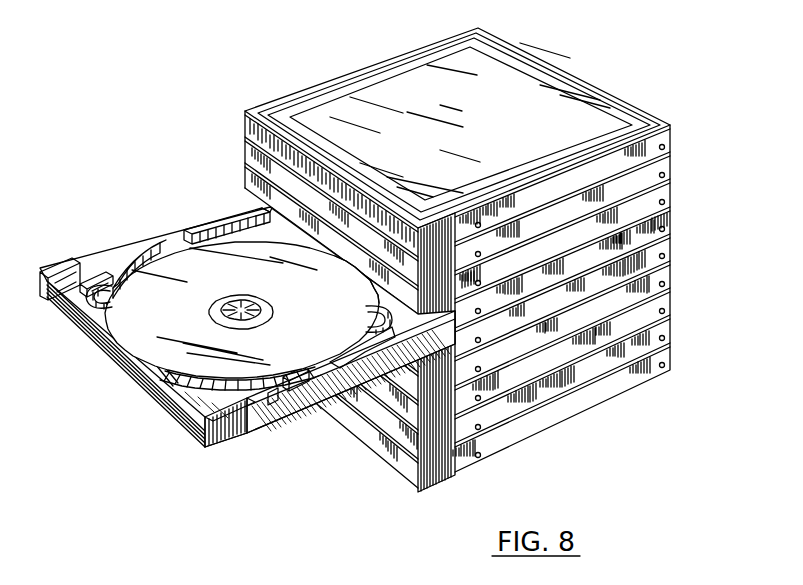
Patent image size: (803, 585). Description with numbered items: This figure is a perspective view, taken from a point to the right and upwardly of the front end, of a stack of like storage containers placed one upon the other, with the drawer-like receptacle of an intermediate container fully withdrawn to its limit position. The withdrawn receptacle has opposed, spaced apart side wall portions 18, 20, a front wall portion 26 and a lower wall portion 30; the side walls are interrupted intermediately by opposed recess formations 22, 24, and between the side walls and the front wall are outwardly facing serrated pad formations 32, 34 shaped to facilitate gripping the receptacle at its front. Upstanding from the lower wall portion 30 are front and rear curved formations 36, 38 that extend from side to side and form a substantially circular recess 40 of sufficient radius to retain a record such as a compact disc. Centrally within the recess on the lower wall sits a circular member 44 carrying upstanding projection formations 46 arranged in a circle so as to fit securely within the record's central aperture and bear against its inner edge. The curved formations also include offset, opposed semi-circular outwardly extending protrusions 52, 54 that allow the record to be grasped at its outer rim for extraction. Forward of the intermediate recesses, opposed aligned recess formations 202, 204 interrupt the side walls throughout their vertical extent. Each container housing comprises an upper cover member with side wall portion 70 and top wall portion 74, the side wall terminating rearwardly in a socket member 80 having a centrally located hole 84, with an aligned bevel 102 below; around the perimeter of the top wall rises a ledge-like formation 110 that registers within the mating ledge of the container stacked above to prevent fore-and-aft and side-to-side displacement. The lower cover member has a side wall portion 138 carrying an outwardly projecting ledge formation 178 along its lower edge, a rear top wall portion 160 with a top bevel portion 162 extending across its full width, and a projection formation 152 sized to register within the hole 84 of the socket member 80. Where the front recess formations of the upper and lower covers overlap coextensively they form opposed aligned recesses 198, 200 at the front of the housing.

The side wall portion 18 is at (305, 382).
The side wall portion 20 is at (260, 213).
The recess formation 22 is at (333, 363).
The recess formation 24 is at (173, 242).
The front wall portion 26 is at (127, 358).
The lower wall portion 30 is at (252, 208).
The serrated pad formation 32 is at (232, 435).
The serrated pad formation 34 is at (57, 267).
The front curved formation 36 is at (203, 387).
The rear curved formation 38 is at (348, 273).
The circular recess 40 is at (242, 310).
The circular member 44 is at (263, 317).
The projection formations 46 is at (247, 320).
The semi-circular protrusion 52 is at (112, 290).
The semi-circular protrusion 54 is at (372, 315).
The side wall portion 70 is at (627, 406).
The top wall portion 74 is at (455, 142).
The socket member 80 is at (672, 188).
The hole 84 is at (672, 220).
The bevel 102 is at (663, 248).
The ledge-like formation 110 is at (603, 102).
The side wall portion 138 is at (457, 307).
The projection formation 152 is at (668, 227).
The top wall portion 160 is at (577, 78).
The top bevel portion 162 is at (547, 63).
The ledge formation 178 is at (465, 325).
The recess 198 is at (353, 333).
The recess 200 is at (240, 200).
The recess formation 202 is at (275, 397).
The recess formation 204 is at (117, 267).